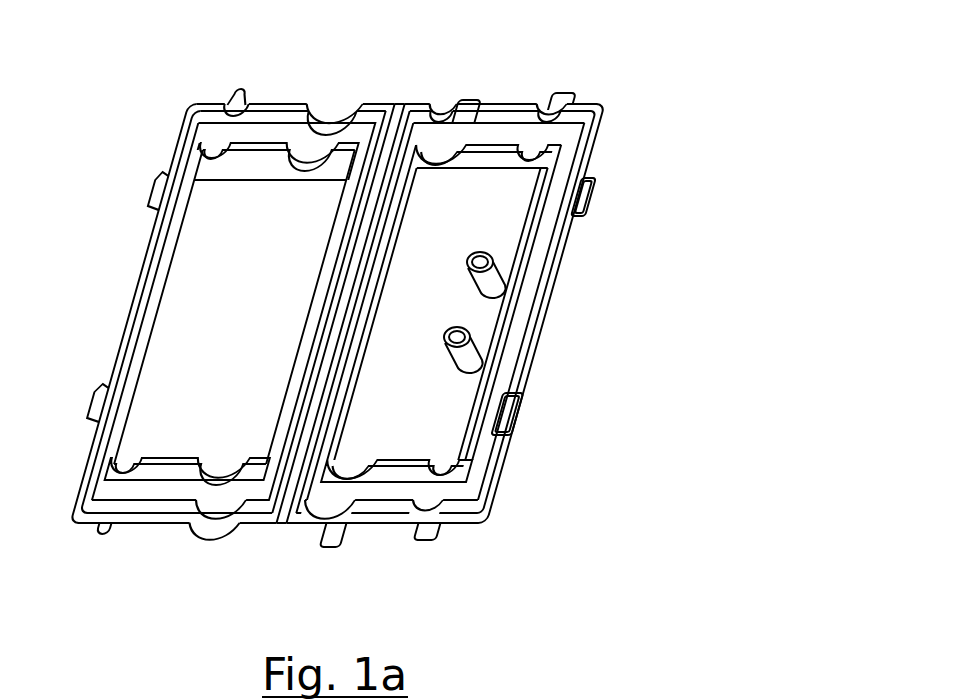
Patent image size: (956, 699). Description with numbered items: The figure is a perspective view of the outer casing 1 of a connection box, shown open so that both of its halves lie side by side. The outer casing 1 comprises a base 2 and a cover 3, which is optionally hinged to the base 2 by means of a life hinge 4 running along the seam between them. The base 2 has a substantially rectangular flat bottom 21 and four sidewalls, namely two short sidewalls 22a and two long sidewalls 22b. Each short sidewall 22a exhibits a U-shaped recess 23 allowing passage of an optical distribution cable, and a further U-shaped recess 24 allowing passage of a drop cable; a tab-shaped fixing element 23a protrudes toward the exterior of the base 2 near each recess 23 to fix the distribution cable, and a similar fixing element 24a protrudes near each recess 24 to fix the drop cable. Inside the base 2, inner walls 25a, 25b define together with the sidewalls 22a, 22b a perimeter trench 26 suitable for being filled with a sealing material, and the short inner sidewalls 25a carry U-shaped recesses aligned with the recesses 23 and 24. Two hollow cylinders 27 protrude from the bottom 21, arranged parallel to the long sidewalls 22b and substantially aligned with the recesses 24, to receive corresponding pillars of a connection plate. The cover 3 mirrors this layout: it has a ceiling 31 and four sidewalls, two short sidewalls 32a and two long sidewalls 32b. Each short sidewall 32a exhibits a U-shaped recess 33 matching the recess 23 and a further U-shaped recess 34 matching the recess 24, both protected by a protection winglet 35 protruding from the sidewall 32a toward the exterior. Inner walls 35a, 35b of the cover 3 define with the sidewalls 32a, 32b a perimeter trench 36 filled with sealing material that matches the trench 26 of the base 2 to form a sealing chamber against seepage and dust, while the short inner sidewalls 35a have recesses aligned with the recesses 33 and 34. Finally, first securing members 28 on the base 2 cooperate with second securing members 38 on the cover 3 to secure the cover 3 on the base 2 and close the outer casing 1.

The outer casing 1 is at (330, 311).
The base 2 is at (459, 311).
The cover 3 is at (200, 315).
The life hinge 4 is at (393, 107).
The bottom 21 is at (508, 200).
The short sidewall 22a is at (517, 103).
The long sidewall 22b is at (563, 260).
The U-shaped recess 23 is at (445, 113).
The fixing element 23a is at (467, 100).
The further U-shaped recess 24 is at (443, 507).
The fixing element 24a is at (562, 95).
The short inner sidewall 25a is at (487, 168).
The inner wall 25b is at (470, 413).
The perimeter trench 26 is at (457, 489).
The hollow cylinder 27 is at (467, 272).
The first securing member 28 is at (588, 192).
The ceiling 31 is at (233, 228).
The short sidewall 32a is at (280, 100).
The long sidewall 32b is at (143, 263).
The U-shaped recess 33 is at (337, 107).
The further U-shaped recess 34 is at (227, 100).
The protection winglet 35 is at (230, 364).
The short inner sidewall 35a is at (295, 180).
The inner wall 35b is at (165, 347).
The perimeter trench 36 is at (113, 490).
The second securing member 38 is at (155, 190).